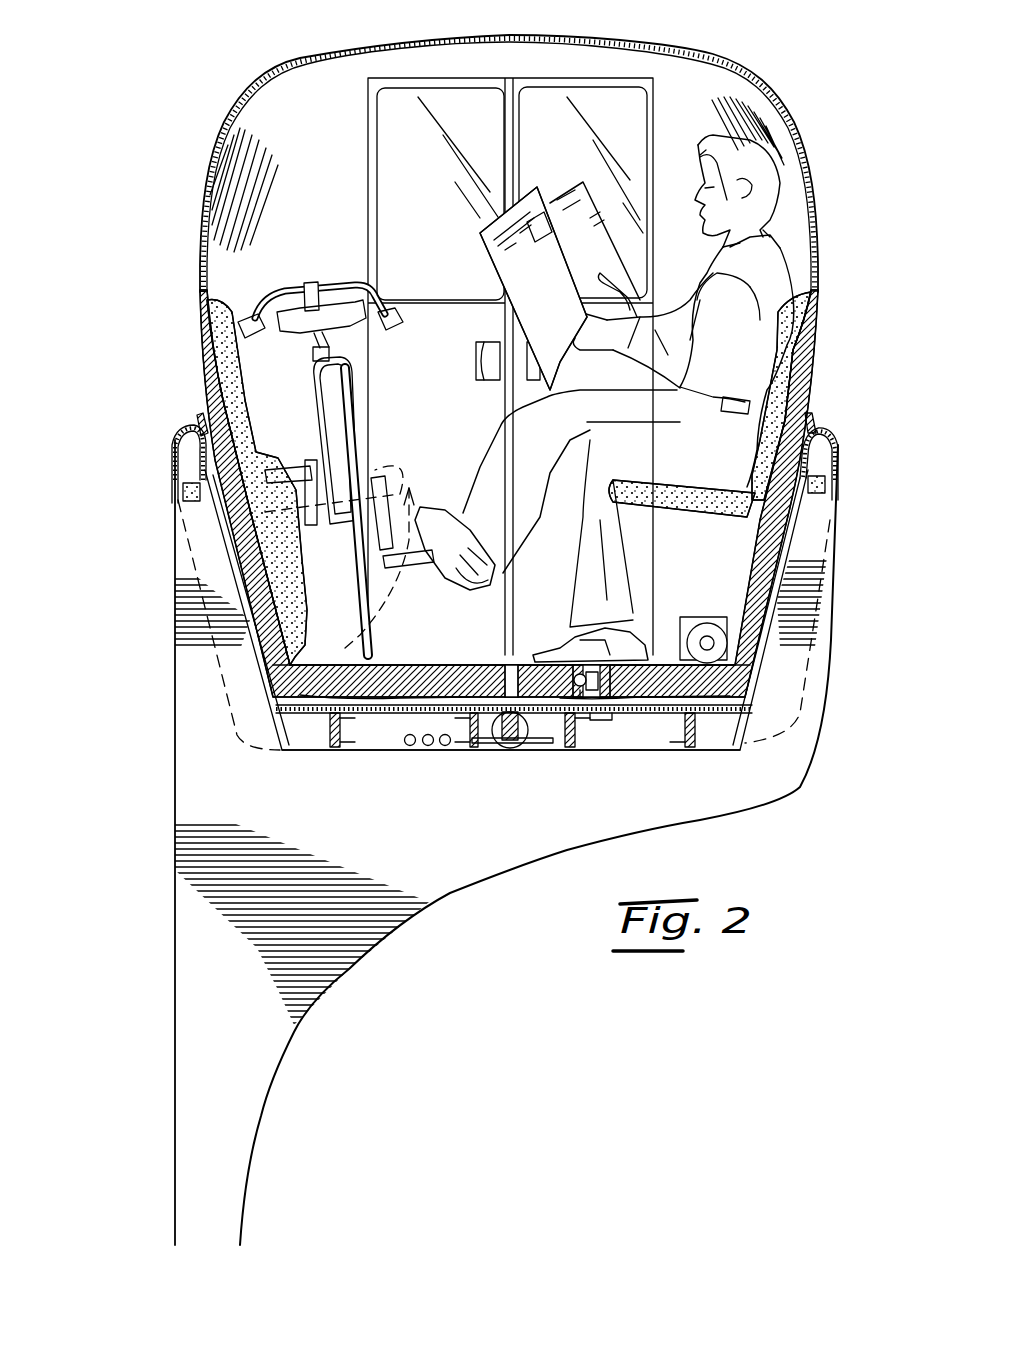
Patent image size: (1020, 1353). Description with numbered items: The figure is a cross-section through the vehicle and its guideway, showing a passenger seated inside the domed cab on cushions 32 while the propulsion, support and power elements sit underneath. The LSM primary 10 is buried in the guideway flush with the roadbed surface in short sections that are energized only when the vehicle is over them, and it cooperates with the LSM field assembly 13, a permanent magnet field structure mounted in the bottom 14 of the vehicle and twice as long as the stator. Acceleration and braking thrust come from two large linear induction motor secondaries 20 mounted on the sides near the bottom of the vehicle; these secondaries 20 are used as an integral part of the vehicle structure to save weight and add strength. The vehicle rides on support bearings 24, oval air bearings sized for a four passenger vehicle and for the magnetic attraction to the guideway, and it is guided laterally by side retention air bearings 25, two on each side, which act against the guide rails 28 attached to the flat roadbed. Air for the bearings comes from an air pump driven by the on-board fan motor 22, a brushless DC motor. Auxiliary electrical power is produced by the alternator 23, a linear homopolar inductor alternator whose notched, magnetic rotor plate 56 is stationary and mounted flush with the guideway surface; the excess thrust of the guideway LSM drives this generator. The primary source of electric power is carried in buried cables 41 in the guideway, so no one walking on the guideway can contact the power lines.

The LSM primary 10 is at (492, 740).
The LSM field assembly 13 is at (503, 650).
The bottom of the vehicle 14 is at (427, 700).
The linear induction motor secondary 20 is at (267, 660).
The fan motor 22 is at (713, 614).
The alternator 23 is at (592, 697).
The support bearings 24 is at (310, 705).
The side retention air bearings 25 is at (203, 422).
The guide rails 28 is at (176, 440).
The cushion 32 is at (294, 568).
The buried cables 41 is at (408, 752).
The rotor plate 56 is at (600, 715).